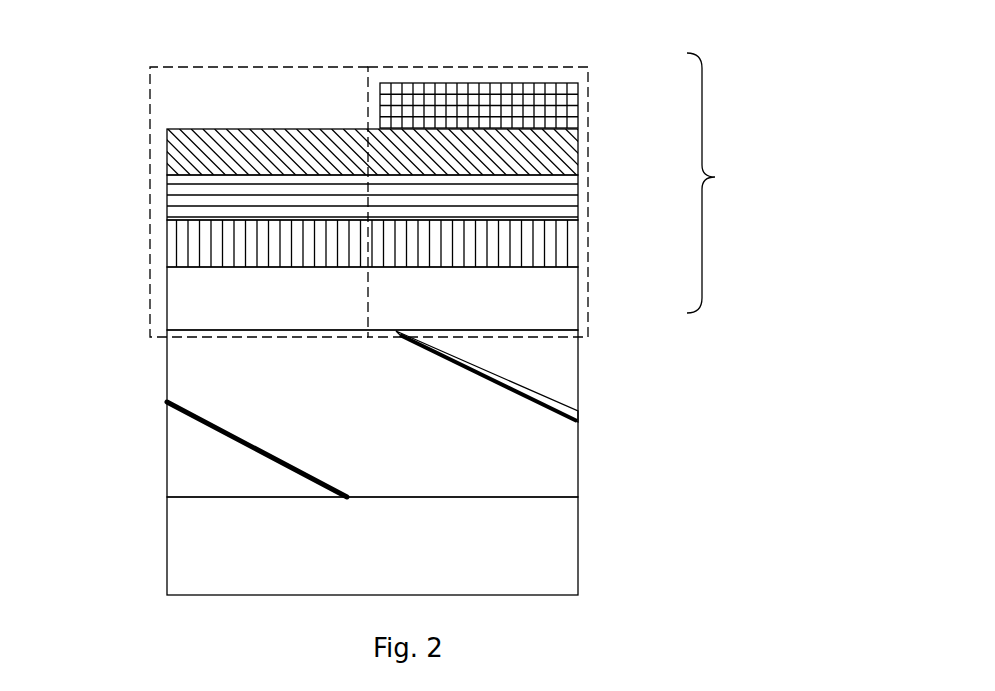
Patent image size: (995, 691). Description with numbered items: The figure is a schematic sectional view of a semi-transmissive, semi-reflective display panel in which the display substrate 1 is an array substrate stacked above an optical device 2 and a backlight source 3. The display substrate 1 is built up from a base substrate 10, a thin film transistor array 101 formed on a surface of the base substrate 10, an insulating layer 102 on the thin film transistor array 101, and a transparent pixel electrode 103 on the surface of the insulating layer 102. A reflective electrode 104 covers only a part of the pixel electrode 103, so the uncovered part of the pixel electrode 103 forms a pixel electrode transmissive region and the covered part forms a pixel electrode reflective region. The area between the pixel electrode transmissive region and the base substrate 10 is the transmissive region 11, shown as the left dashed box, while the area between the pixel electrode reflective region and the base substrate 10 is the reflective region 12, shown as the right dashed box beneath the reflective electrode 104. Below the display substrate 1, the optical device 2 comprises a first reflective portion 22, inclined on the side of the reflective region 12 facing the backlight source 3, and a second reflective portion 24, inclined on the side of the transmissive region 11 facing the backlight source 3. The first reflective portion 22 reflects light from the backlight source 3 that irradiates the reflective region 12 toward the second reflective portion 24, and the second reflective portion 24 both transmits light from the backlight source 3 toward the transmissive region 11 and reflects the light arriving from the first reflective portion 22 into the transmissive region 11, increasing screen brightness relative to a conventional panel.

The display substrate 1 is at (712, 183).
The optical device 2 is at (512, 435).
The backlight source 3 is at (548, 533).
The base substrate 10 is at (562, 307).
The transmissive region 11 is at (252, 67).
The reflective region 12 is at (463, 67).
The first reflective portion 22 is at (542, 395).
The second reflective portion 24 is at (232, 441).
The thin film transistor array 101 is at (558, 256).
The insulating layer 102 is at (562, 212).
The pixel electrode 103 is at (563, 160).
The reflective electrode 104 is at (543, 108).